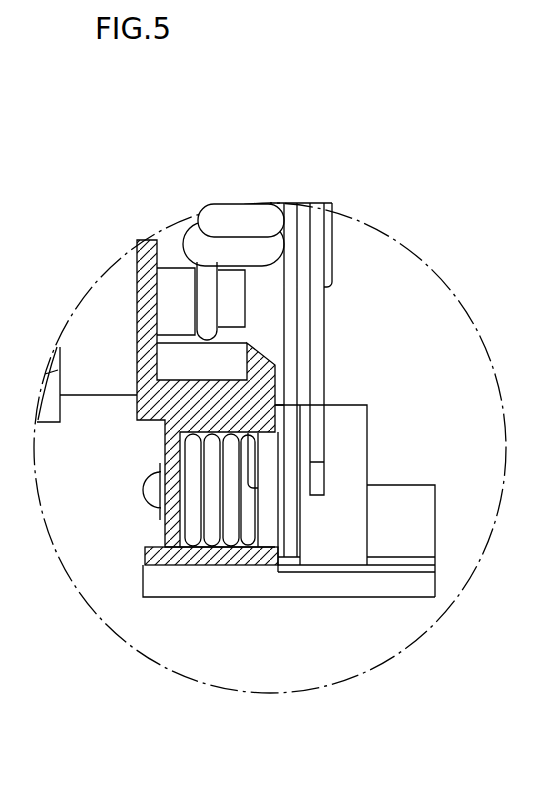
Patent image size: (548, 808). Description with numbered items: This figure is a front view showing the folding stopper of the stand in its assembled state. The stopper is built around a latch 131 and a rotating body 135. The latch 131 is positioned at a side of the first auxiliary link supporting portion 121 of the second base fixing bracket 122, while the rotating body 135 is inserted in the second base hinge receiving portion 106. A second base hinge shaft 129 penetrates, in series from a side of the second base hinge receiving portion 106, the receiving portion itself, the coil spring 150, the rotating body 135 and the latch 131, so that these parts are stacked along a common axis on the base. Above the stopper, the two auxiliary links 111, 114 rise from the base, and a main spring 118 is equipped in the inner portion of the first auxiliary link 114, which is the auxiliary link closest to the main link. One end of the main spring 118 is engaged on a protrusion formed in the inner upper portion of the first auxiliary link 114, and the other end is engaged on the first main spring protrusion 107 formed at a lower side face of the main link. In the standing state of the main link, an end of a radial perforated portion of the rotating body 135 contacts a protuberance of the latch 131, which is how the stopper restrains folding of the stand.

The second base hinge receiving portion 106 is at (150, 560).
The first main spring protrusion 107 is at (170, 287).
The auxiliary link 111 is at (323, 327).
The first auxiliary link 114 is at (290, 366).
The main spring 118 is at (243, 207).
The first auxiliary link supporting portion 121 is at (355, 458).
The second base fixing bracket 122 is at (396, 588).
The second base hinge shaft 129 is at (155, 493).
The latch 131 is at (267, 537).
The rotating body 135 is at (245, 535).
The coil spring 150 is at (203, 530).